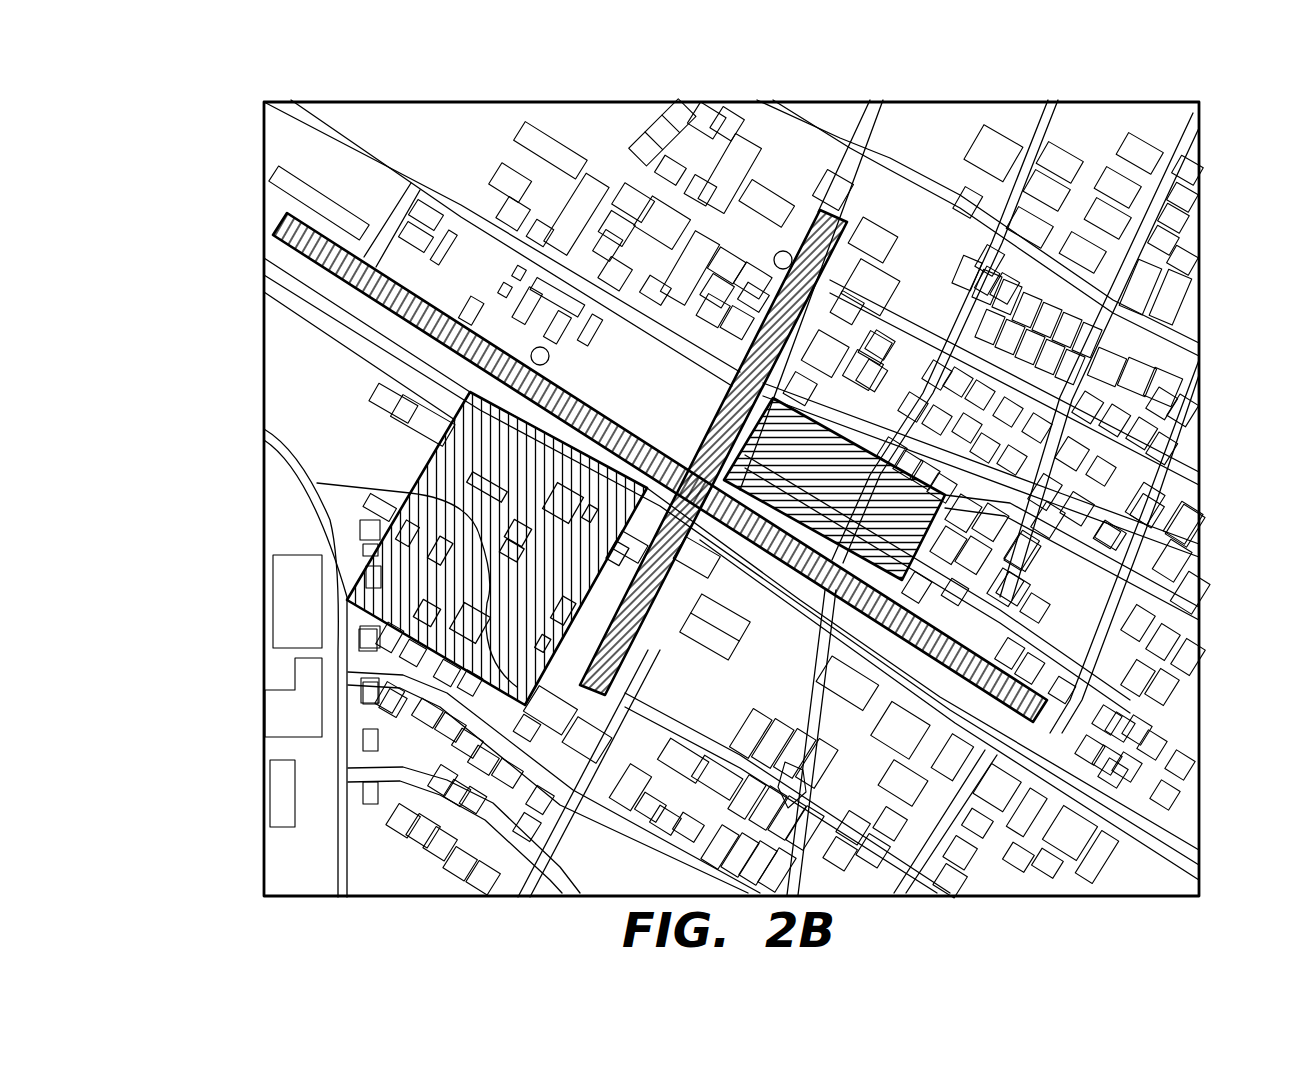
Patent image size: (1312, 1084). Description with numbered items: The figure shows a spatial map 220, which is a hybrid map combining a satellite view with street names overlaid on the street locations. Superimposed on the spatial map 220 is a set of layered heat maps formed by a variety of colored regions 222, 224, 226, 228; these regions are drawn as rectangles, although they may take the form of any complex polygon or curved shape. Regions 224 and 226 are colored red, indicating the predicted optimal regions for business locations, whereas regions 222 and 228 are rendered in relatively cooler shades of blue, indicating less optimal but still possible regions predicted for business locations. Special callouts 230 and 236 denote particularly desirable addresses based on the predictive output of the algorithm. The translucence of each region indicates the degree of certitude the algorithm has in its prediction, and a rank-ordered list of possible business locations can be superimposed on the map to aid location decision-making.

The spatial map 220 is at (304, 102).
The colored region 222 is at (950, 497).
The colored region 224 is at (822, 210).
The colored region 226 is at (368, 262).
The colored region 228 is at (400, 613).
The special callout 230 is at (527, 420).
The special callout 236 is at (800, 307).